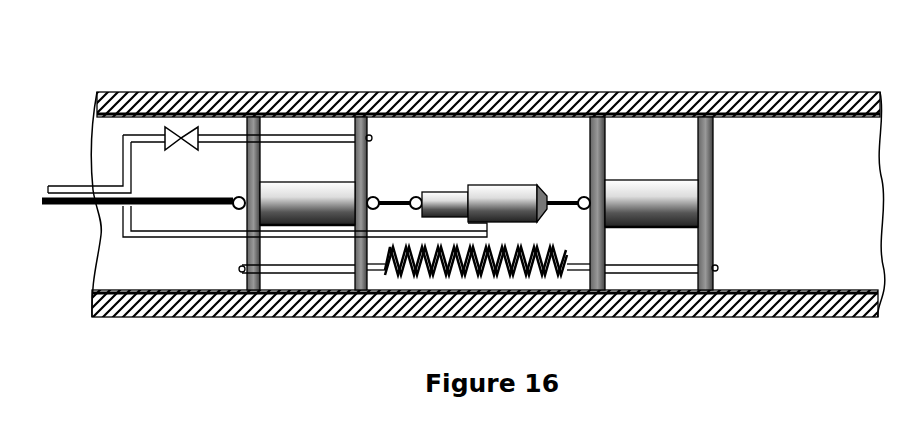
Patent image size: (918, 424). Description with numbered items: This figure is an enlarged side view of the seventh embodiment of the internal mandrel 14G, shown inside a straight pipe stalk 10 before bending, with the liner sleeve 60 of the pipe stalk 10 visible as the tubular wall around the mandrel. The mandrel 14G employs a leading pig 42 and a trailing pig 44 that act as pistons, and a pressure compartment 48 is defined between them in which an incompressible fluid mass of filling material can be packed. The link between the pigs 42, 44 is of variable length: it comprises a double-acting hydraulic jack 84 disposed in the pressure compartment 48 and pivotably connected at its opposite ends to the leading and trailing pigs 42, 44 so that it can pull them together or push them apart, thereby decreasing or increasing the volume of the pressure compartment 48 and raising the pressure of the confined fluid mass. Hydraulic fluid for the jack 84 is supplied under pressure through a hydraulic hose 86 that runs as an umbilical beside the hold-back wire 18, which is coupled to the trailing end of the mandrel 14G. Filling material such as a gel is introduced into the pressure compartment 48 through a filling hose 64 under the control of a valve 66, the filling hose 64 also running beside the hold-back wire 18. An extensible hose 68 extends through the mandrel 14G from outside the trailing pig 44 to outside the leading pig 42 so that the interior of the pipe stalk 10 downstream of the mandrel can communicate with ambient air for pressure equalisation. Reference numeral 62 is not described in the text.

The pipe stalk 10 is at (786, 207).
The mandrel 14G is at (354, 70).
The hold-back wire 18 is at (183, 208).
The leading pig 42 is at (299, 255).
The trailing pig 44 is at (661, 150).
The pressure compartment 48 is at (515, 128).
The liner sleeve 60 is at (775, 92).
The housing wall 62 is at (148, 93).
The filling hose 64 is at (280, 133).
The valve 66 is at (177, 127).
The extensible hose 68 is at (640, 268).
The double-acting hydraulic jack 84 is at (455, 193).
The hydraulic hose 86 is at (122, 218).